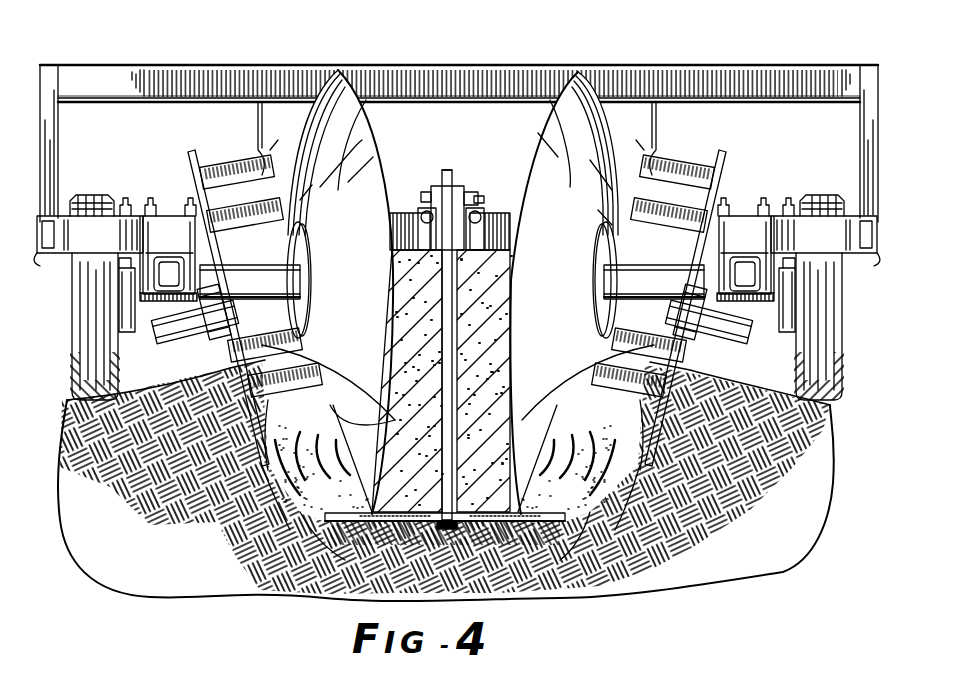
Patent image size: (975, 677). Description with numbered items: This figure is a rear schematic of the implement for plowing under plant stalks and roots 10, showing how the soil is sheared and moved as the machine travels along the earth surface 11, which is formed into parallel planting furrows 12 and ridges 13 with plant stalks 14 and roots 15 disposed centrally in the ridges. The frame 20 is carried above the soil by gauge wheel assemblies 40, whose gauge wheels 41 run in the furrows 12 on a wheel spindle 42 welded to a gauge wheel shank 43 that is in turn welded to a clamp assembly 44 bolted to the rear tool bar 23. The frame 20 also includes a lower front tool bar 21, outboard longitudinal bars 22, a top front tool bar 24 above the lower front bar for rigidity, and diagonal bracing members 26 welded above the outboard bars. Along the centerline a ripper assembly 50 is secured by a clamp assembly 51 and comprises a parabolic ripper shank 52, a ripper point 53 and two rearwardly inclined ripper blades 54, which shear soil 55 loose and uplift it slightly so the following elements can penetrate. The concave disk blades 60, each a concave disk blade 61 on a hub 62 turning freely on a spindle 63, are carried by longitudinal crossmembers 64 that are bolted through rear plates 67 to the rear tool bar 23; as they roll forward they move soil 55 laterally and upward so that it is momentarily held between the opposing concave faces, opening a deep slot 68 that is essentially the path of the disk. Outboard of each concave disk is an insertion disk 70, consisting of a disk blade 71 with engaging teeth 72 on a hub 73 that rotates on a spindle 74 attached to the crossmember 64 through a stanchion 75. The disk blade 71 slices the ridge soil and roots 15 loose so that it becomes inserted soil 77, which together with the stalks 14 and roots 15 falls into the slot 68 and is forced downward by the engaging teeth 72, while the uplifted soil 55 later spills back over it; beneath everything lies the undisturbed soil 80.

The implement for plowing under plant stalks and roots 10 is at (98, 46).
The earth surface 11 is at (160, 380).
The planting furrows 12 is at (72, 400).
The ridges 13 is at (451, 423).
The plant stalks 14 is at (270, 146).
The roots 15 is at (458, 508).
The frame 20 is at (240, 56).
The lower front tool bar 21 is at (404, 215).
The outboard longitudinal bars 22 is at (453, 252).
The rear tool bar 23 is at (100, 245).
The top front tool bar 24 is at (127, 78).
The diagonal bracing members 26 is at (50, 140).
The gauge wheel assemblies 40 is at (68, 284).
The gauge wheels 41 is at (72, 338).
The wheel spindle 42 is at (118, 300).
The gauge wheel shank 43 is at (457, 362).
The clamp assembly 44 is at (128, 215).
The ripper assembly 50 is at (448, 168).
The clamp assembly 51 is at (457, 186).
The parabolic ripper shank 52 is at (443, 543).
The ripper point 53 is at (470, 522).
The ripper blades 54 is at (392, 522).
The soil 55 is at (424, 366).
The concave disk blades 60 is at (382, 130).
The concave disk blade 61 is at (343, 167).
The hubs 62 is at (310, 266).
The spindles 63 is at (262, 272).
The longitudinal crossmembers 64 is at (170, 262).
The rear plates 67 is at (160, 216).
The slot 68 is at (370, 425).
The insertion disk 70 is at (192, 152).
The disk blade 71 is at (188, 156).
The engaging teeth 72 is at (202, 356).
The hub 73 is at (208, 334).
The spindle 74 is at (165, 330).
The stanchion 75 is at (457, 274).
The inserted soil 77 is at (434, 536).
The undisturbed soil 80 is at (700, 572).